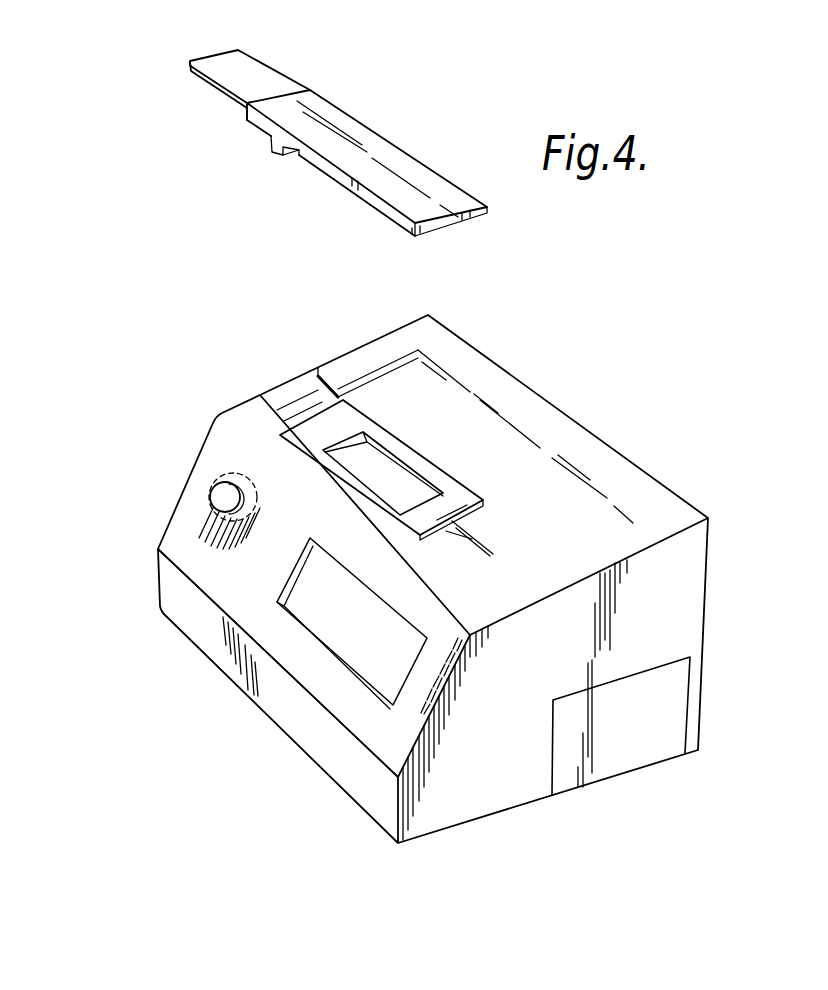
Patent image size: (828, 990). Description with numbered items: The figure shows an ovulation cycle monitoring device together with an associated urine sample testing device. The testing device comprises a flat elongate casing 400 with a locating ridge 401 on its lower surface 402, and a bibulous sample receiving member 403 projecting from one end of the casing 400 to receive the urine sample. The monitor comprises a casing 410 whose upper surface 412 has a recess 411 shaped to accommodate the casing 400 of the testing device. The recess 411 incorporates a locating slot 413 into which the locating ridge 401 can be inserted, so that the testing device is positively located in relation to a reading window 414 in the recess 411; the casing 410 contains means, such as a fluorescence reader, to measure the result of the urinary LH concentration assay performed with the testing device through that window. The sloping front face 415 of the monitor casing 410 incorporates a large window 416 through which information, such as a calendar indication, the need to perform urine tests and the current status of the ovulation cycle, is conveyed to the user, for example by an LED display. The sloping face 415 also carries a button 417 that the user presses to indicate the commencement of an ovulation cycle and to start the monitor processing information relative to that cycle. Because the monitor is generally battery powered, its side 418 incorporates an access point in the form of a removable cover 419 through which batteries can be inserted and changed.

The casing 400 is at (383, 150).
The locating ridge 401 is at (278, 150).
The lower surface 402 is at (253, 127).
The bibulous sample receiving member 403 is at (255, 78).
The casing 410 is at (238, 407).
The recess 411 is at (452, 479).
The upper surface 412 is at (538, 423).
The locating slot 413 is at (340, 400).
The reading window 414 is at (387, 452).
The sloping front face 415 is at (188, 550).
The large window 416 is at (357, 635).
The button 417 is at (224, 497).
The side 418 is at (500, 773).
The removable cover 419 is at (648, 737).